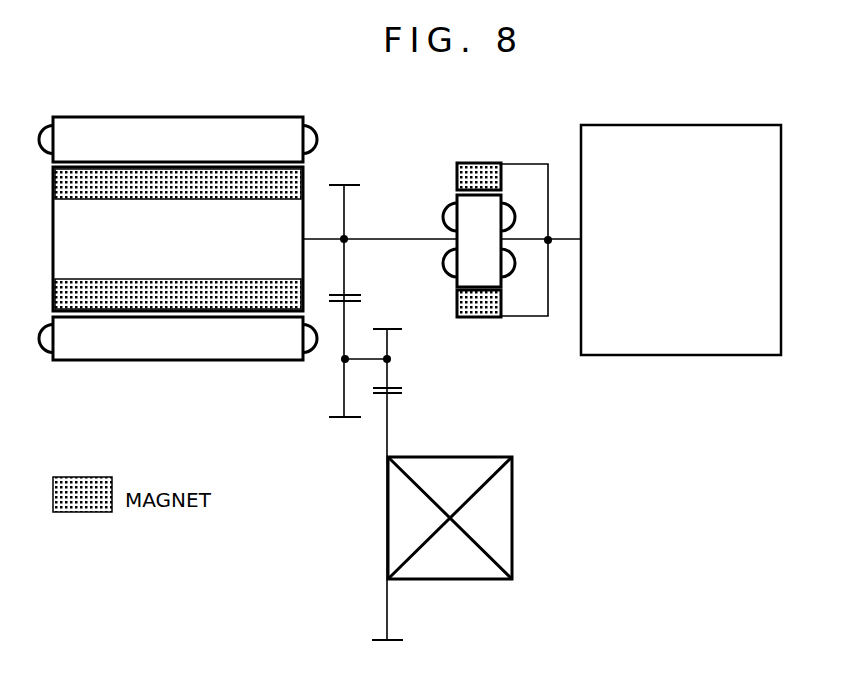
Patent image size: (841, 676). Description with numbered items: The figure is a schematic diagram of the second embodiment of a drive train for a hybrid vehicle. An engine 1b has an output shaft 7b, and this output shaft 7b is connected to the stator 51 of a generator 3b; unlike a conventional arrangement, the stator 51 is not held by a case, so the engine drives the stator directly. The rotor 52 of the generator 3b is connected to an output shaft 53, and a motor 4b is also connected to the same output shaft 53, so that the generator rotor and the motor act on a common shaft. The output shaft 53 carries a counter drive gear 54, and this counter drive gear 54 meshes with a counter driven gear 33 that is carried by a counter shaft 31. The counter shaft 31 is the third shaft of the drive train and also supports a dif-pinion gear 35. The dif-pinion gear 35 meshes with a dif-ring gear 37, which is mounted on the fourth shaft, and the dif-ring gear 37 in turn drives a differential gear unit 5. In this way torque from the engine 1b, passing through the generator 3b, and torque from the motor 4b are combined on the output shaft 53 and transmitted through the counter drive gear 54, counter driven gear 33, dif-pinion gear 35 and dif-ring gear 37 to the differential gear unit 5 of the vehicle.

The engine 1b is at (660, 357).
The generator 3b is at (469, 207).
The motor 4b is at (139, 384).
The differential gear unit 5 is at (512, 517).
The output shaft 7b is at (565, 243).
The counter shaft 31 is at (360, 358).
The counter driven gear 33 is at (333, 297).
The dif-pinion gear 35 is at (400, 333).
The dif-ring gear 37 is at (400, 395).
The stator 51 is at (457, 170).
The rotor 52 is at (457, 198).
The output shaft 53 is at (368, 242).
The counter drive gear 54 is at (347, 185).